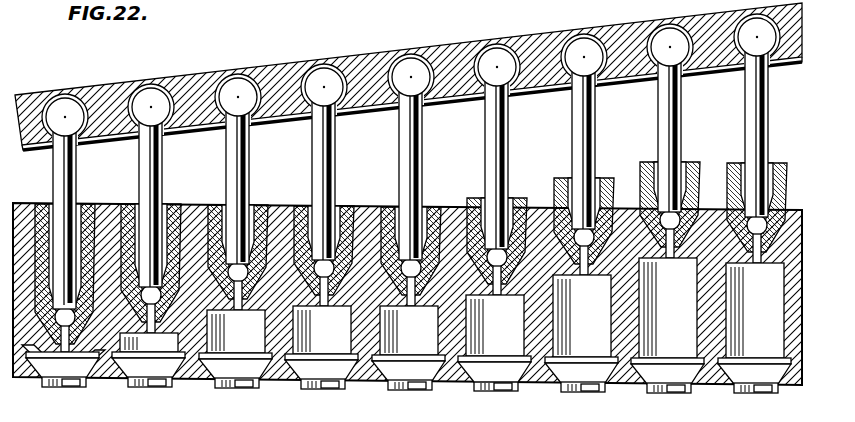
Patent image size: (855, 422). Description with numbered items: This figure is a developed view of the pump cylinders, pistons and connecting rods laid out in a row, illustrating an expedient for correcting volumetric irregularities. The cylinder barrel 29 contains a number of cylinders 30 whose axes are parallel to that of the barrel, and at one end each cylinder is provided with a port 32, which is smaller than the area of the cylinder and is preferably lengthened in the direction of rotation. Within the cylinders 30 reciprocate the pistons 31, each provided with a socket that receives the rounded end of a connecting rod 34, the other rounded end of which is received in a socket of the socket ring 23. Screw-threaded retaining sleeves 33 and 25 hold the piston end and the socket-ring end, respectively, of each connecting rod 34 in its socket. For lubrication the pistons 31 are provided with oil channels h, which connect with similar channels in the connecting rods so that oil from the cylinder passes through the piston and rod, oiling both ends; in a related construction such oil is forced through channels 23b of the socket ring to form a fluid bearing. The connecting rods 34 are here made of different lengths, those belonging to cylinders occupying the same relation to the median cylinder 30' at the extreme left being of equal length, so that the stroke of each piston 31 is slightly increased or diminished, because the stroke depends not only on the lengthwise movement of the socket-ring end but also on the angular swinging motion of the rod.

The socket ring 23 is at (357, 58).
The channels 23b is at (493, 37).
The retaining sleeve 25 is at (160, 170).
The connecting rod 34 is at (505, 162).
The retaining sleeve 33 is at (253, 210).
The cylinder barrel 29 is at (363, 205).
The cylinder 30 is at (408, 319).
The piston 31 is at (340, 305).
The oil channel h is at (624, 313).
The port 32 is at (325, 388).
The median cylinder 30' is at (63, 368).